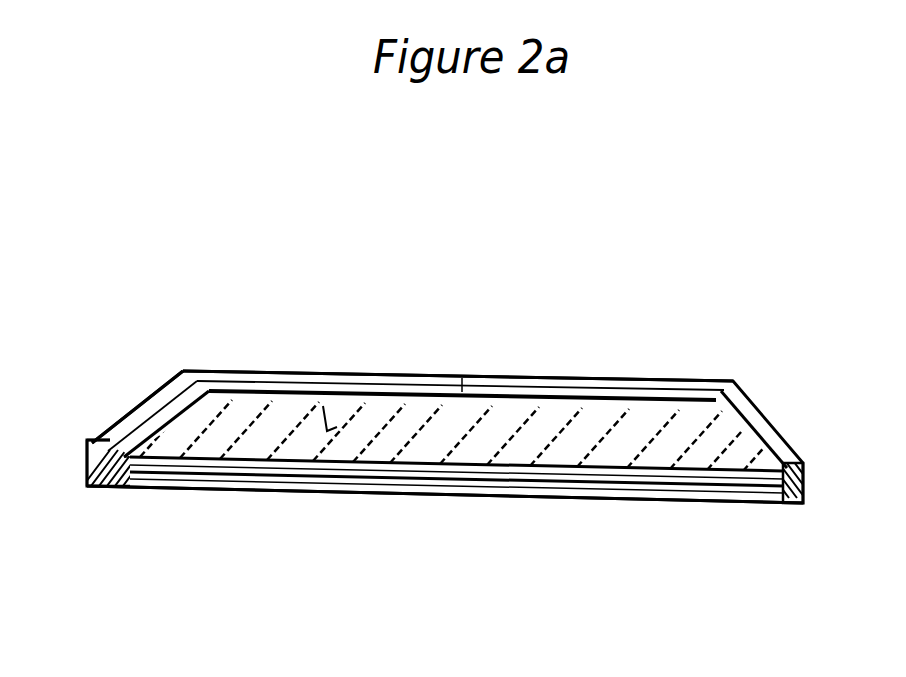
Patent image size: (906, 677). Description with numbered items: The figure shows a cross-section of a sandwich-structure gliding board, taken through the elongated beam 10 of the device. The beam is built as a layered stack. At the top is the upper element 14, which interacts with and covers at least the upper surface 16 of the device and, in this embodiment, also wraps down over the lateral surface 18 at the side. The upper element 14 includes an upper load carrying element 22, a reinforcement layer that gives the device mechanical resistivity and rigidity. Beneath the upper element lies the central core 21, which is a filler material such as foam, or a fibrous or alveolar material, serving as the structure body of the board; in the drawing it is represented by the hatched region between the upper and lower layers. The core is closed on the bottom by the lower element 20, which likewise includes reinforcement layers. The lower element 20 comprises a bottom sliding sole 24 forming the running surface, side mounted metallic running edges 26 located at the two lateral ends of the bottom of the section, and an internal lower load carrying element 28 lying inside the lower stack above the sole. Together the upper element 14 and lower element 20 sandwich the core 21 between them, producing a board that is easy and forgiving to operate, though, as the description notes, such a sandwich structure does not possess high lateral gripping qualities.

The elongated beam 10 is at (698, 337).
The upper element 14 is at (190, 362).
The upper surface 16 is at (275, 365).
The lateral surface 18 is at (141, 403).
The lower element 20 is at (90, 496).
The central core 21 is at (662, 428).
The upper load carrying element 22 is at (463, 380).
The bottom sliding sole 24 is at (316, 495).
The side mounted metallic running edges 26 is at (780, 502).
The internal lower load carrying element 28 is at (477, 486).